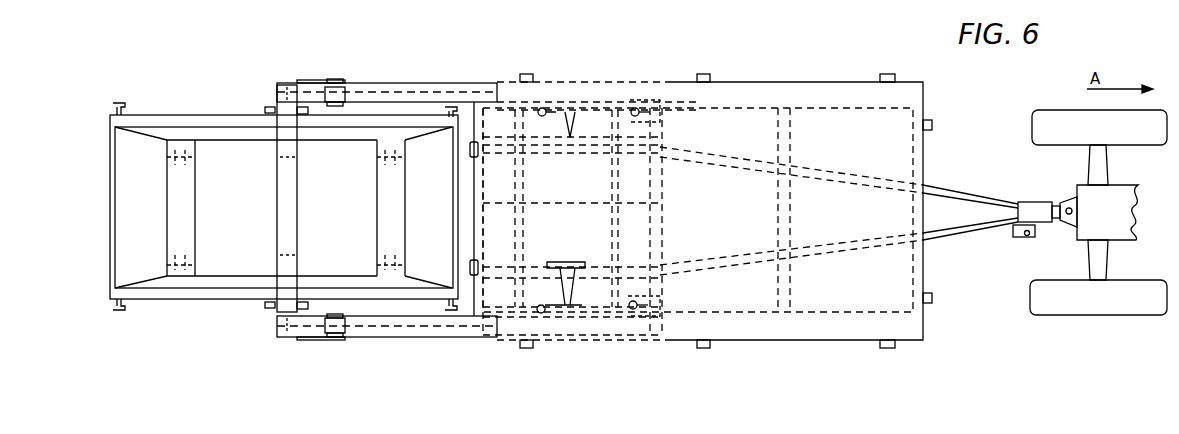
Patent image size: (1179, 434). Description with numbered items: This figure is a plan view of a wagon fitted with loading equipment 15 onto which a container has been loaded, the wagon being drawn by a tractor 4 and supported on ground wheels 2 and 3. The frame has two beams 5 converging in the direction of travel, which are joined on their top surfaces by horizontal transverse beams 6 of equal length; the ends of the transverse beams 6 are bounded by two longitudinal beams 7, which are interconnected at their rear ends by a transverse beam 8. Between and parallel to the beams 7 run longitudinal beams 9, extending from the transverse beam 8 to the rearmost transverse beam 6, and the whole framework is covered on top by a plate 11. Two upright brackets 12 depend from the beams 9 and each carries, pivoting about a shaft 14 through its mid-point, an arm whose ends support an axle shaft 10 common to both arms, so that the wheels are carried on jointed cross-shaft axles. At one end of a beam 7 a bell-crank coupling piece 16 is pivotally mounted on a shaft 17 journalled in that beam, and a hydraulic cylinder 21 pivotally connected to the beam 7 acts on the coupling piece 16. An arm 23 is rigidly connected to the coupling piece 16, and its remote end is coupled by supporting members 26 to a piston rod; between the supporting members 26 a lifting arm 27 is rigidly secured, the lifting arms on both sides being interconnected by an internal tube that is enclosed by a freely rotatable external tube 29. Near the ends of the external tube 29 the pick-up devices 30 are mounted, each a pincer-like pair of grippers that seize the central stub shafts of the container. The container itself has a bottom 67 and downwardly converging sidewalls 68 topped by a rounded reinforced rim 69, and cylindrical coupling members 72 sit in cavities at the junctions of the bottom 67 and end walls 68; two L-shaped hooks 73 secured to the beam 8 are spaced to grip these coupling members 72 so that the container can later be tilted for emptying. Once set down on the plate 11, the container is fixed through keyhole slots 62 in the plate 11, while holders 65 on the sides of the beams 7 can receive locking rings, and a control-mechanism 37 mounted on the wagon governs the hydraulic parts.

The ground wheel 2 is at (650, 292).
The ground wheel 3 is at (508, 267).
The tractor 4 is at (1112, 316).
The beams 5 is at (968, 201).
The transverse beams 6 is at (665, 228).
The longitudinal beams 7 is at (763, 82).
The transverse beam 8 is at (483, 207).
The longitudinal beams 9 is at (628, 158).
The axle shaft 10 is at (523, 214).
The plate 11 is at (832, 116).
The upright brackets 12 is at (572, 164).
The shaft 14 is at (566, 268).
The loading equipment 15 is at (368, 83).
The bell-crank coupling piece 16 is at (463, 83).
The shaft 17 is at (482, 338).
The hydraulic cylinder 21 is at (633, 96).
The arm 23 is at (402, 83).
The supporting members 26 is at (306, 83).
The lifting arm 27 is at (289, 85).
The external tube 29 is at (278, 217).
The pick-up devices 30 is at (265, 108).
The control-mechanism 37 is at (1024, 238).
The keyhole slots 62 is at (556, 110).
The holders 65 is at (703, 74).
The bottom 67 is at (230, 276).
The sidewalls 68 is at (142, 137).
The rim 69 is at (184, 115).
The coupling members 72 is at (196, 158).
The L-shaped hooks 73 is at (470, 152).